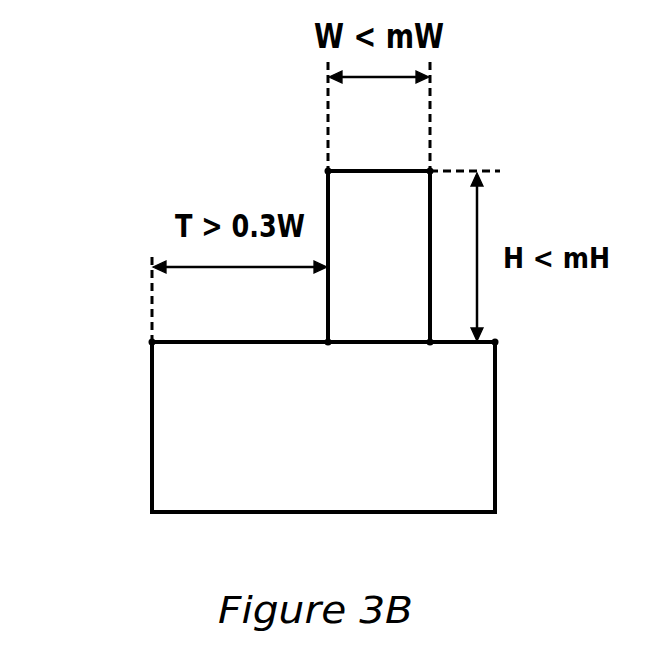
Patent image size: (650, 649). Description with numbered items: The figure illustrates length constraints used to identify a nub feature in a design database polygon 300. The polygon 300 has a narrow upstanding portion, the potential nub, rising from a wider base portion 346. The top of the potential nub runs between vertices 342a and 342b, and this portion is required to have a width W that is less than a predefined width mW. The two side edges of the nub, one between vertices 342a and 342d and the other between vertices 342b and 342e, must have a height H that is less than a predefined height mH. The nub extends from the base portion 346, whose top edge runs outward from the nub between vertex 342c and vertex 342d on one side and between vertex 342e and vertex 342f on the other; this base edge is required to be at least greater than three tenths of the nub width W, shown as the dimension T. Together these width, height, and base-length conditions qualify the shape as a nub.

The polygon 300 is at (127, 170).
The base portion 346 is at (113, 343).
The vertex 342a is at (328, 171).
The vertex 342b is at (430, 171).
The vertex 342c is at (152, 342).
The vertex 342d is at (328, 342).
The vertex 342e is at (430, 342).
The vertex 342f is at (495, 342).